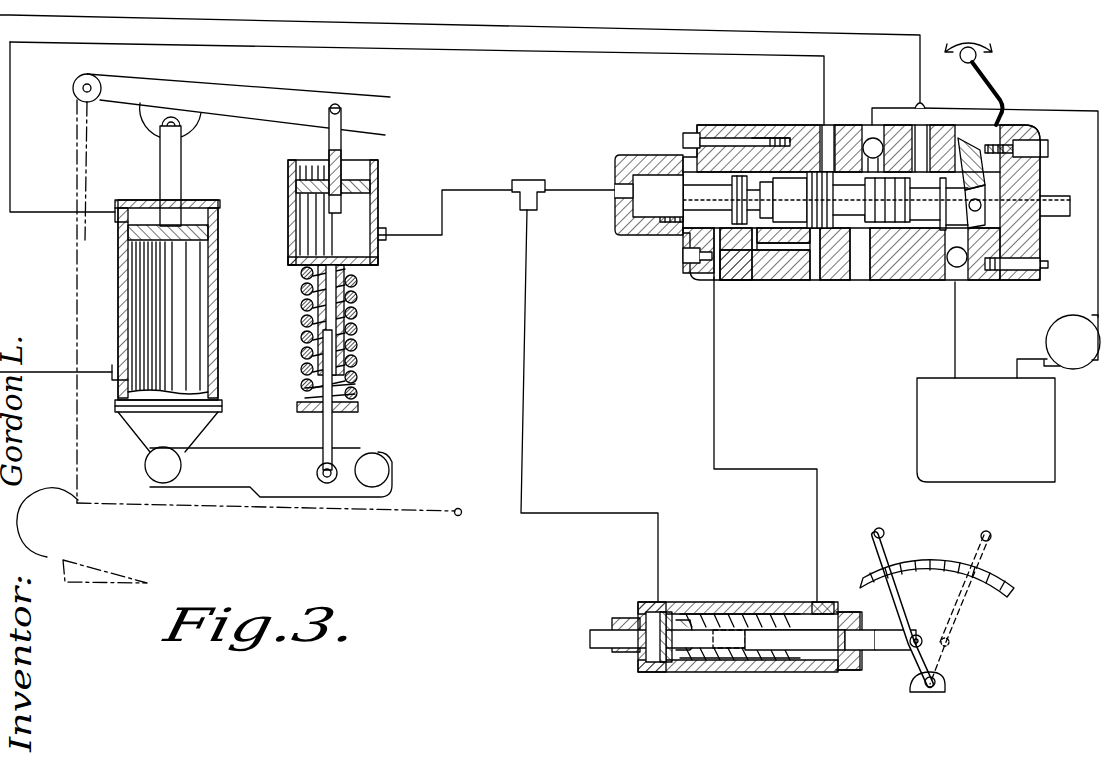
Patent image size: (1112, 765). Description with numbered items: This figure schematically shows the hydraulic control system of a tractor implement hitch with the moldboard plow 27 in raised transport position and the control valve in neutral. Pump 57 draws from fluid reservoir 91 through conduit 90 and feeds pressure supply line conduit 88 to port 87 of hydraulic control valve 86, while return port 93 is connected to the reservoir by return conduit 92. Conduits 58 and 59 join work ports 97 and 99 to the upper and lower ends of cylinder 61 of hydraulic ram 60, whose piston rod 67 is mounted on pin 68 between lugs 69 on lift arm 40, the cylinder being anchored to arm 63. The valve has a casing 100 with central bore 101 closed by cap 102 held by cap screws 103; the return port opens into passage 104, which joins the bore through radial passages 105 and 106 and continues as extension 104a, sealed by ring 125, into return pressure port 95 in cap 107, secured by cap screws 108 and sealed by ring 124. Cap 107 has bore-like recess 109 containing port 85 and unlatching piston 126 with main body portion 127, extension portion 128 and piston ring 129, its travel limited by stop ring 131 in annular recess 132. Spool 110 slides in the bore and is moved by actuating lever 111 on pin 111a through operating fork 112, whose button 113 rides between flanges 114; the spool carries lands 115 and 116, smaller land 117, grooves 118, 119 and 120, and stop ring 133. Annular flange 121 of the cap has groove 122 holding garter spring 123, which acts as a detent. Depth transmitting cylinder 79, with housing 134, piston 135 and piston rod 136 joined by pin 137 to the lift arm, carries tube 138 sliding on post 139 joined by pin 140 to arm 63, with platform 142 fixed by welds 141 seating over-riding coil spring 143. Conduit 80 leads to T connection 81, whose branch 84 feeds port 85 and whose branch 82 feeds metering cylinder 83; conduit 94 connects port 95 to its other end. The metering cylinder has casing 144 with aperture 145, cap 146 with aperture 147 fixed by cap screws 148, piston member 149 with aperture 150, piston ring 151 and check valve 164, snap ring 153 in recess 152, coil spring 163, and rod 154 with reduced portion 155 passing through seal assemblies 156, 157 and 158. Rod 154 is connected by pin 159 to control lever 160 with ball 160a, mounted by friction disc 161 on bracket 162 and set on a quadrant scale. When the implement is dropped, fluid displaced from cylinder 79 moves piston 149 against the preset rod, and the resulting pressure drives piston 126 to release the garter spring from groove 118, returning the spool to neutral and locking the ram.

The moldboard plow 27 is at (95, 560).
The lift arm 40 is at (252, 92).
The pump 57 is at (1090, 356).
The conduit 58 is at (710, 58).
The conduit 59 is at (836, 32).
The hydraulic ram 60 is at (191, 326).
The cylinder 61 is at (220, 340).
The arm 63 is at (292, 456).
The piston rod 67 is at (172, 180).
The pin 68 is at (162, 130).
The lugs 69 is at (145, 115).
The hydraulic cylinder unit 79 is at (326, 199).
The fluid carrying conduit 80 is at (480, 190).
The T connection 81 is at (533, 178).
The branch conduit 82 is at (526, 312).
The metering cylinder 83 is at (746, 590).
The branch conduit 84 is at (580, 193).
The port 85 is at (612, 190).
The hydraulic control valve 86 is at (831, 181).
The port 87 is at (866, 138).
The pressure supply line conduit 88 is at (1077, 110).
The conduit 90 is at (1030, 355).
The fluid reservoir 91 is at (1037, 450).
The return conduit 92 is at (955, 348).
The return port 93 is at (958, 268).
The conduit 94 is at (714, 368).
The return pressure port 95 is at (712, 282).
The work port 97 is at (828, 130).
The work port 99 is at (930, 122).
The casing 100 is at (888, 240).
The central bore 101 is at (1018, 240).
The cap 102 is at (1024, 284).
The cap screws 103 is at (1048, 148).
The longitudinally extending passage 104 is at (850, 285).
The passage extension 104a is at (738, 280).
The radial passage 105 is at (812, 280).
The radial passage 106 is at (920, 270).
The cap-like extension 107 is at (648, 236).
The cap screws 108 is at (686, 130).
The bore-like recess 109 is at (622, 236).
The spool 110 is at (1006, 204).
The actuating lever 111 is at (988, 86).
The pin 111a is at (972, 200).
The operating fork 112 is at (982, 175).
The collar-like button 113 is at (1015, 160).
The flanges 114 is at (940, 212).
The land 115 is at (880, 226).
The land 116 is at (832, 184).
The third land 117 is at (745, 196).
The annular groove 118 is at (782, 160).
The annular groove 119 is at (812, 262).
The annular groove 120 is at (940, 268).
The annular flange 121 is at (996, 575).
The annular recess 122 is at (750, 270).
The garter spring 123 is at (770, 140).
The sealing ring 124 is at (732, 128).
The sealing ring 125 is at (745, 275).
The unlatching piston 126 is at (632, 174).
The main body portion 127 is at (684, 162).
The extension portion 128 is at (720, 185).
The piston ring 129 is at (665, 232).
The stop ring 131 is at (680, 232).
The annular recess 132 is at (700, 265).
The stop ring 133 is at (790, 194).
The cylindrical casing 134 is at (287, 232).
The piston 135 is at (300, 165).
The piston rod 136 is at (342, 142).
The pin 137 is at (338, 105).
The hollow tube 138 is at (358, 300).
The rod-like post 139 is at (330, 352).
The pin 140 is at (338, 465).
The welds 141 is at (340, 410).
The platform 142 is at (350, 404).
The over-riding coil spring 143 is at (360, 282).
The cylindrical casing 144 is at (742, 632).
The aperture 145 is at (612, 628).
The cap 146 is at (846, 614).
The aperture 147 is at (848, 636).
The cap screws 148 is at (842, 680).
The piston member 149 is at (690, 612).
The aperture 150 is at (696, 625).
The piston ring 151 is at (670, 665).
The annular recess 152 is at (672, 660).
The snap ring 153 is at (672, 605).
The rod 154 is at (775, 650).
The reduced diameter portion 155 is at (710, 660).
The liquid seal ring assembly 156 is at (700, 660).
The liquid seal ring assembly 157 is at (848, 668).
The liquid seal ring assembly 158 is at (620, 652).
The pin 159 is at (910, 648).
The control lever 160 is at (967, 615).
The ball-like element 160a is at (884, 530).
The friction disc 161 is at (934, 690).
The bracket 162 is at (945, 690).
The coil spring 163 is at (750, 616).
The one-way check valve 164 is at (650, 660).